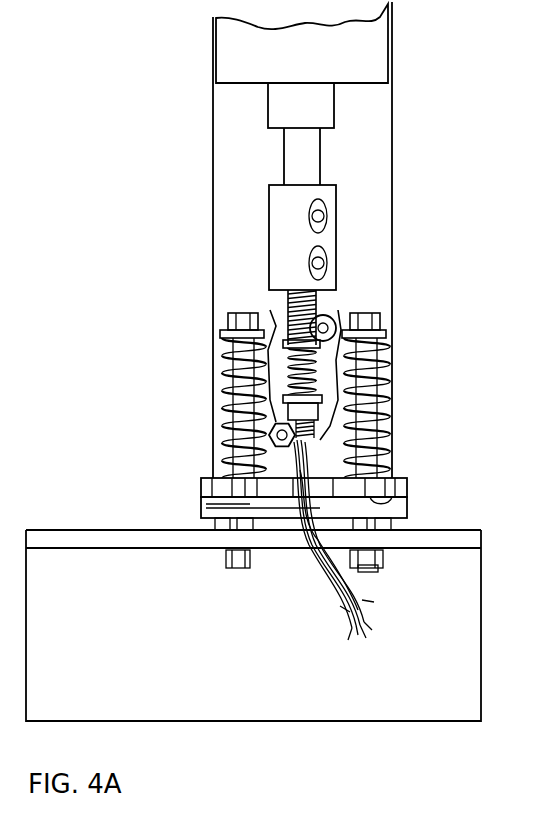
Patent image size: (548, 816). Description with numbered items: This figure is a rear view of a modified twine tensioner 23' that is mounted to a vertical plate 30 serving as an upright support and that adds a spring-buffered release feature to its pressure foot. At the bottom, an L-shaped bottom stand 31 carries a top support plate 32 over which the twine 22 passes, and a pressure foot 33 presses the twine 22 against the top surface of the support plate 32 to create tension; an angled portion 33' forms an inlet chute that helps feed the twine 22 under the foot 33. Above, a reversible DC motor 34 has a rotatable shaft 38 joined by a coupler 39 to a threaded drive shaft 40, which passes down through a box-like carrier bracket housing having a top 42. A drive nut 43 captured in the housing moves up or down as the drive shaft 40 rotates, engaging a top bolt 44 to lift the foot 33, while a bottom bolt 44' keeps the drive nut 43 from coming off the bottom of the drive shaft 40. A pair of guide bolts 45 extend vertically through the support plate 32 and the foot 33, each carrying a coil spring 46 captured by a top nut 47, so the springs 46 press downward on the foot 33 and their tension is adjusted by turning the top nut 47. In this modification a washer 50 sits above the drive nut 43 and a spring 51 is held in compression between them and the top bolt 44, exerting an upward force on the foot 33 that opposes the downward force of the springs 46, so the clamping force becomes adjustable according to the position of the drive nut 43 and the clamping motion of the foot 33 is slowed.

The modified twine tensioner 23' is at (356, 240).
The vertical plate 30 is at (393, 200).
The reversible DC motor 34 is at (232, 68).
The rotatable shaft 38 is at (322, 160).
The coupler 39 is at (274, 233).
The washer 50 is at (330, 312).
The threaded drive shaft 40 is at (270, 312).
The top bolt 44 is at (380, 310).
The spring 51 is at (322, 370).
The drive nut 43 is at (322, 405).
The bottom bolt 44' is at (372, 435).
The top 42 is at (320, 473).
The twine 22 is at (370, 622).
The top nut 47 is at (222, 352).
The coil spring 46 is at (222, 395).
The guide bolt 45 is at (222, 447).
The pressure foot 33 is at (273, 475).
The angled portion 33' is at (343, 510).
The top support plate 32 is at (100, 530).
The L-shaped bottom stand 31 is at (313, 722).